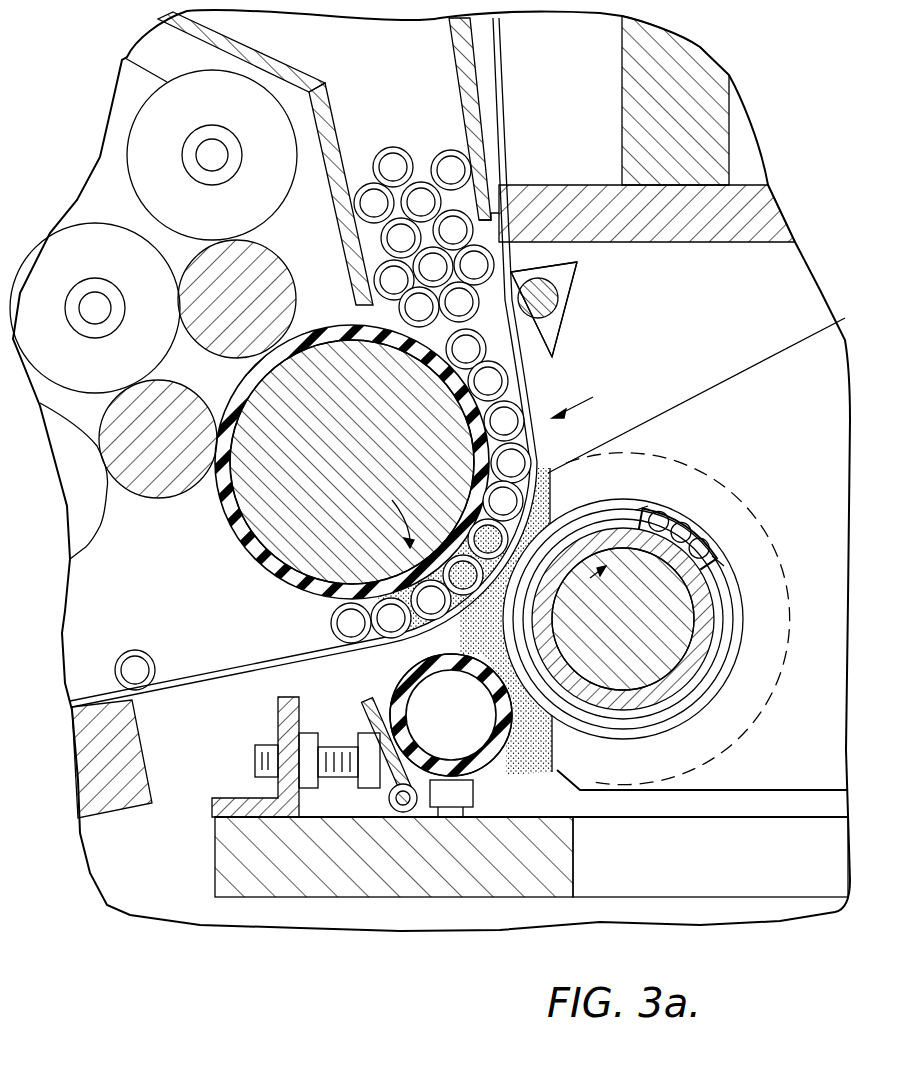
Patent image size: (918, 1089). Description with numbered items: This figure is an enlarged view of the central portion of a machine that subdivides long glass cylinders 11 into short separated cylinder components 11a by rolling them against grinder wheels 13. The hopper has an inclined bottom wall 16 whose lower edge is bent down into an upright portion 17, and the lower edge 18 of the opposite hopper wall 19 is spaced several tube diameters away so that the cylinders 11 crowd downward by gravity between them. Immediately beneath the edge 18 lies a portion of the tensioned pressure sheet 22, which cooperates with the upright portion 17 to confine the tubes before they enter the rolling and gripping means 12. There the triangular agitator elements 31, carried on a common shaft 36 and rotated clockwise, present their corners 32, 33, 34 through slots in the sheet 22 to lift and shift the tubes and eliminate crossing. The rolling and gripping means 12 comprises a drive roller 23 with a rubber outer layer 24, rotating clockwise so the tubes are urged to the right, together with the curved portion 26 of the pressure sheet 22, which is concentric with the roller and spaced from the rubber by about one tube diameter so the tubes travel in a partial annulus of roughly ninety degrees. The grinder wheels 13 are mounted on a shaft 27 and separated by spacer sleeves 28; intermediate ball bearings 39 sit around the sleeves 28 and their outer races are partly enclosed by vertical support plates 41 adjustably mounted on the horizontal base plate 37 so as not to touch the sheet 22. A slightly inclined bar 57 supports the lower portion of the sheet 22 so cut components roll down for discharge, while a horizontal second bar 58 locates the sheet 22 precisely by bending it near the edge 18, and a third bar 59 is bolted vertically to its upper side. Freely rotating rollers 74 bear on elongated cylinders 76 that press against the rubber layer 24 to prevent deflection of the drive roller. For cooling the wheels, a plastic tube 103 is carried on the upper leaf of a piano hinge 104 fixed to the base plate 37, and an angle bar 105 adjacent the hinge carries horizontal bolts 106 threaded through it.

The glass cylinders 11 is at (446, 150).
The separated cylinder components 11a is at (127, 649).
The rolling and gripping means 12 is at (585, 403).
The grinder wheels 13 is at (725, 475).
The inclined bottom wall 16 is at (255, 60).
The upright portion 17 is at (339, 200).
The lower edge 18 is at (499, 200).
The hopper wall 19 is at (454, 42).
The pressure sheet 22 is at (498, 65).
The drive roller 23 is at (253, 513).
The rubber outer layer 24 is at (253, 559).
The curved portion of pressure sheet 26 is at (465, 621).
The shaft 27 is at (677, 620).
The spacer sleeves 28 is at (650, 703).
The agitator elements 31 is at (558, 328).
The corner of agitator element 32 is at (577, 262).
The corner of agitator element 33 is at (552, 357).
The corner of agitator element 34 is at (508, 277).
The common shaft 36 is at (550, 305).
The base plate 37 is at (378, 892).
The intermediate bearings 39 is at (718, 560).
The vertical support plates 41 is at (733, 383).
The bar 57 is at (107, 810).
The second bar 58 is at (774, 213).
The third bar 59 is at (697, 63).
The rollers 74 is at (145, 195).
The elongated cylinders 76 is at (220, 352).
The plastic tube 103 is at (406, 676).
The piano hinge 104 is at (360, 708).
The angle bar 105 is at (227, 797).
The horizontal bolts 106 is at (255, 760).